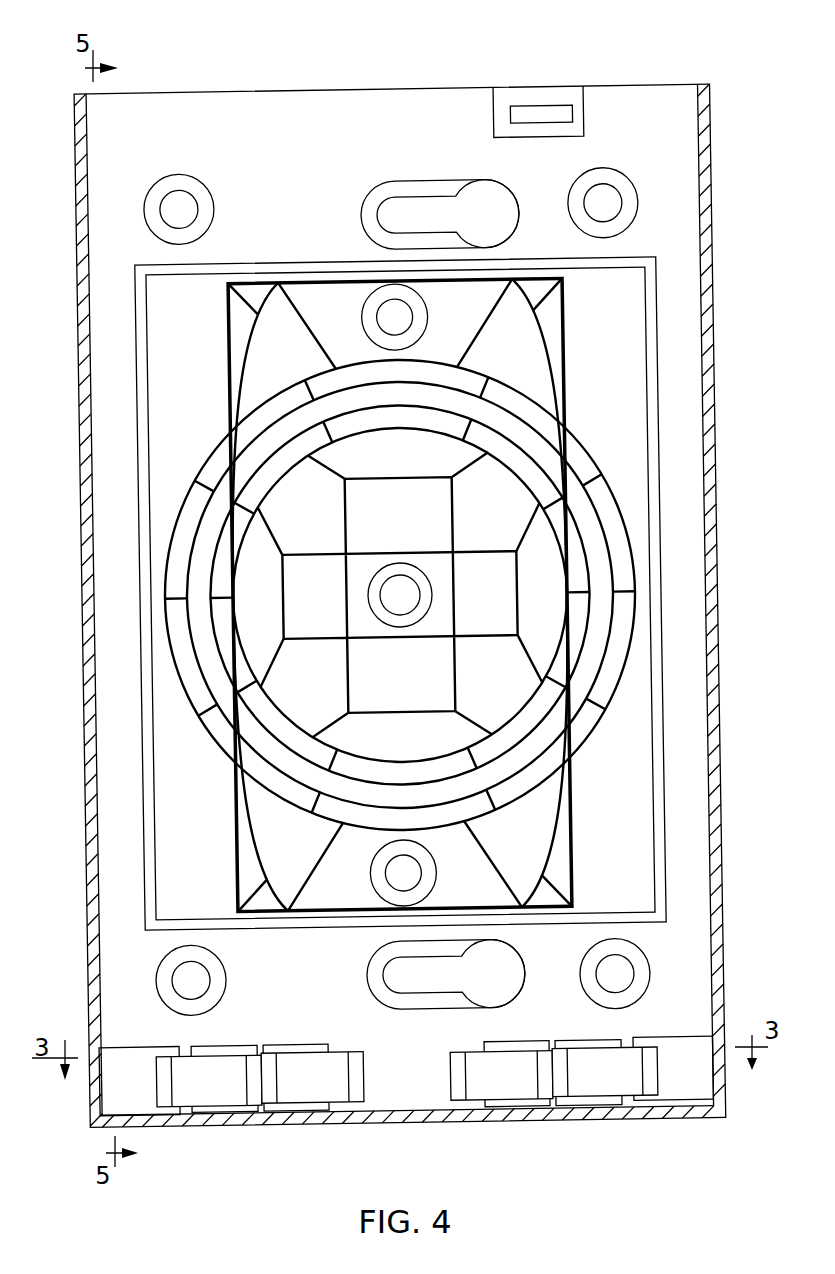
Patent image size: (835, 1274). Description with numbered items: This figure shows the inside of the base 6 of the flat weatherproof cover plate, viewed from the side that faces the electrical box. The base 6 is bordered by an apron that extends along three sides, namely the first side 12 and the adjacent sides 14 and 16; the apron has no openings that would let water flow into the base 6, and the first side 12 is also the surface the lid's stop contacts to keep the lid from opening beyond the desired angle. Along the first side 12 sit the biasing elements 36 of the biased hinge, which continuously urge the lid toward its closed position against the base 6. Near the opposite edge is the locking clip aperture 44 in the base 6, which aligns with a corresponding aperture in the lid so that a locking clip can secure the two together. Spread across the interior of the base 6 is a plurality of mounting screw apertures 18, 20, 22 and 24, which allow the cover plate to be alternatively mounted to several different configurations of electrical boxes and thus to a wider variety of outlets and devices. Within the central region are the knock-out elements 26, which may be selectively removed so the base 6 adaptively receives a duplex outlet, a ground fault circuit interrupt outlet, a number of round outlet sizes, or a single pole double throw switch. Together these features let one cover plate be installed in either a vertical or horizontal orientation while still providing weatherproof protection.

The base 6 is at (712, 682).
The first side 12 is at (450, 1118).
The side 14 is at (712, 513).
The side 16 is at (86, 553).
The mounting screw aperture 18 is at (400, 210).
The mounting screw aperture 20 is at (398, 603).
The mounting screw aperture 22 is at (177, 213).
The mounting screw aperture 24 is at (387, 316).
The knock-out elements 26 is at (509, 361).
The biasing elements 36 is at (313, 1078).
The locking clip aperture 44 is at (548, 114).